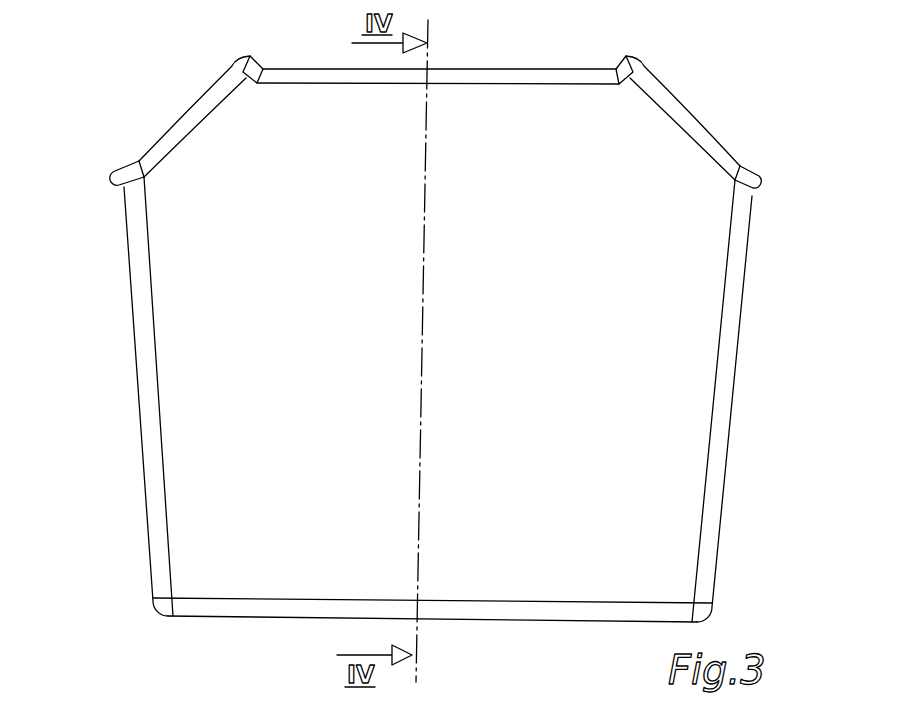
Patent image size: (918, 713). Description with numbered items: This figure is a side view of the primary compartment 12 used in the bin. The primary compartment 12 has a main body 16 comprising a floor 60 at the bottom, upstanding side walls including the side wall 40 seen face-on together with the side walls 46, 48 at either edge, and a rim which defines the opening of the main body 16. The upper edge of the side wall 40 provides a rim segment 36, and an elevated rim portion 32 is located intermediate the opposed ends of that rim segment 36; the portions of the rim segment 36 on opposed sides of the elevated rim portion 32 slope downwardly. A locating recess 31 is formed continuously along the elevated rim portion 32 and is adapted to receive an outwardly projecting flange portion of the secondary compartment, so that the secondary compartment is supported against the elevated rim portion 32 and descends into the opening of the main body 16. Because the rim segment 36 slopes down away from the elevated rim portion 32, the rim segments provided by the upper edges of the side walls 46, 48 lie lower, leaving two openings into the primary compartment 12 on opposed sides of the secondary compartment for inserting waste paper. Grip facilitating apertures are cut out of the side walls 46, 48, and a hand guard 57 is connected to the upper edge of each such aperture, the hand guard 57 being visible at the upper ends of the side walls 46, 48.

The primary compartment 12 is at (429, 332).
The main body 16 is at (756, 401).
The locating recess 31 is at (517, 62).
The elevated rim portion 32 is at (247, 55).
The rim segment 36 is at (177, 130).
The side wall 40 is at (126, 396).
The side wall 46 is at (136, 370).
The side wall 48 is at (736, 372).
The hand guard 57 is at (122, 226).
The floor 60 is at (263, 618).